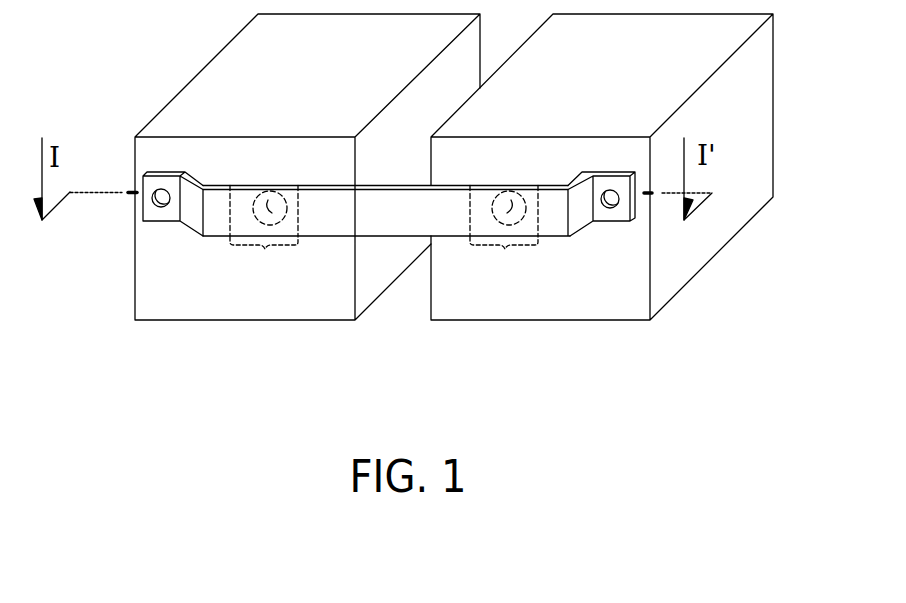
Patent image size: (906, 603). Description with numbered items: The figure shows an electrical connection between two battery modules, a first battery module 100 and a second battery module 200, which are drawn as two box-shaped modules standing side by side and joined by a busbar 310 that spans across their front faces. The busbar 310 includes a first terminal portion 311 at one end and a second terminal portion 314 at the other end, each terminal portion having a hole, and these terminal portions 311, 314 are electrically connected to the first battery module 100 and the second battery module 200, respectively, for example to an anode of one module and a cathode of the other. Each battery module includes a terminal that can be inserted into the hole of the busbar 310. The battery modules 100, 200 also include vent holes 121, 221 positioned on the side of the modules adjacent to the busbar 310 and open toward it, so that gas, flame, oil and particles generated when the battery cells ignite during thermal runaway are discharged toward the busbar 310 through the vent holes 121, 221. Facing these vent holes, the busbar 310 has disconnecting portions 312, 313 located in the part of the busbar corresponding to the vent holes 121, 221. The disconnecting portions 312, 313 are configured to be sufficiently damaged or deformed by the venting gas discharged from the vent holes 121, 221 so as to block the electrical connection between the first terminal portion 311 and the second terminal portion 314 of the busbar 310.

The first battery module 100 is at (332, 88).
The second battery module 200 is at (623, 88).
The vent hole 121 is at (269, 206).
The vent hole 221 is at (510, 208).
The busbar 310 is at (553, 237).
The first terminal portion 311 is at (161, 208).
The disconnecting portion 312 is at (265, 248).
The disconnecting portion 313 is at (505, 248).
The second terminal portion 314 is at (613, 217).